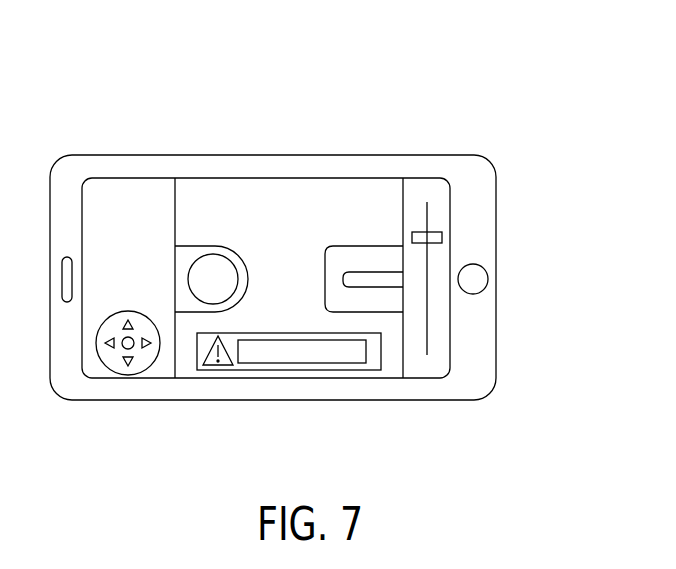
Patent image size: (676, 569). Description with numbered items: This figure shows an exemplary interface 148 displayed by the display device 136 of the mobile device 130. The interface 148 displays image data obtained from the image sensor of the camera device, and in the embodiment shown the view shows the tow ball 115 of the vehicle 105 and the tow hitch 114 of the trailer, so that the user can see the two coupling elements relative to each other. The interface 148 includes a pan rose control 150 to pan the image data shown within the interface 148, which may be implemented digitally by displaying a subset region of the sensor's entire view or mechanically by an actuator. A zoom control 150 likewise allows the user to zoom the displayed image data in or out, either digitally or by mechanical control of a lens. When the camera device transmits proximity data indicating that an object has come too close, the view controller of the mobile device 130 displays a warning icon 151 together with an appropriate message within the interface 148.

The mobile device 130 is at (510, 124).
The display device 136 is at (313, 185).
The vehicle 105 is at (178, 228).
The interface 148 is at (213, 190).
The tow ball 115 is at (233, 263).
The tow hitch 114 is at (378, 251).
The pan rose control 150 is at (440, 208).
The warning icon 151 is at (371, 360).